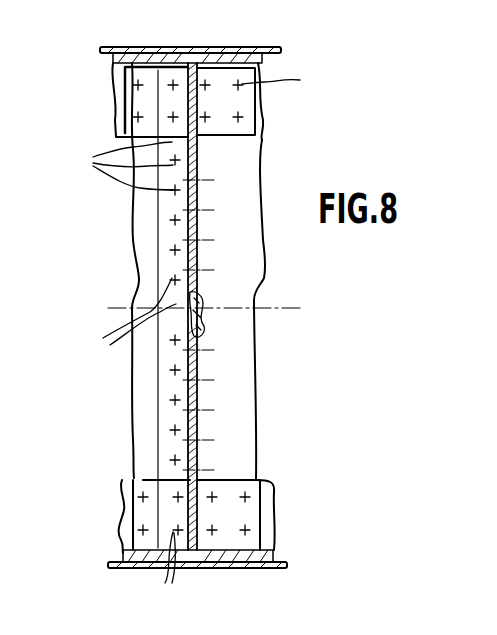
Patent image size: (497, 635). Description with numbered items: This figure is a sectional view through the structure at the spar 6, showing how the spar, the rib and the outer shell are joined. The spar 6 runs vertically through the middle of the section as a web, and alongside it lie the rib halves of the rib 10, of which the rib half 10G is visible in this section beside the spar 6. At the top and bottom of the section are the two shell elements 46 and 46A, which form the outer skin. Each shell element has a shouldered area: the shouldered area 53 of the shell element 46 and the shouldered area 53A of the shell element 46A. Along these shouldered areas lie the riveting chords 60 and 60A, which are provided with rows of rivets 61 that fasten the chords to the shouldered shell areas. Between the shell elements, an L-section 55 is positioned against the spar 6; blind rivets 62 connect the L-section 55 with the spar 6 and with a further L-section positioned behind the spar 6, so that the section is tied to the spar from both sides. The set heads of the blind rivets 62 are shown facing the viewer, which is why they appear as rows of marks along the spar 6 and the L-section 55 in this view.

The spar 6 is at (133, 277).
The rib 10 is at (255, 294).
The rib half 10G is at (200, 366).
The shell element 46 is at (105, 48).
The shell element 46A is at (287, 560).
The shouldered area of shell element 53 is at (165, 46).
The shouldered area of shell element 53A is at (124, 555).
The L-section 55 is at (168, 362).
The riveting chord 60 is at (265, 137).
The riveting chord 60A is at (124, 505).
The rivets 61 is at (137, 82).
The blind rivets 62 is at (190, 336).